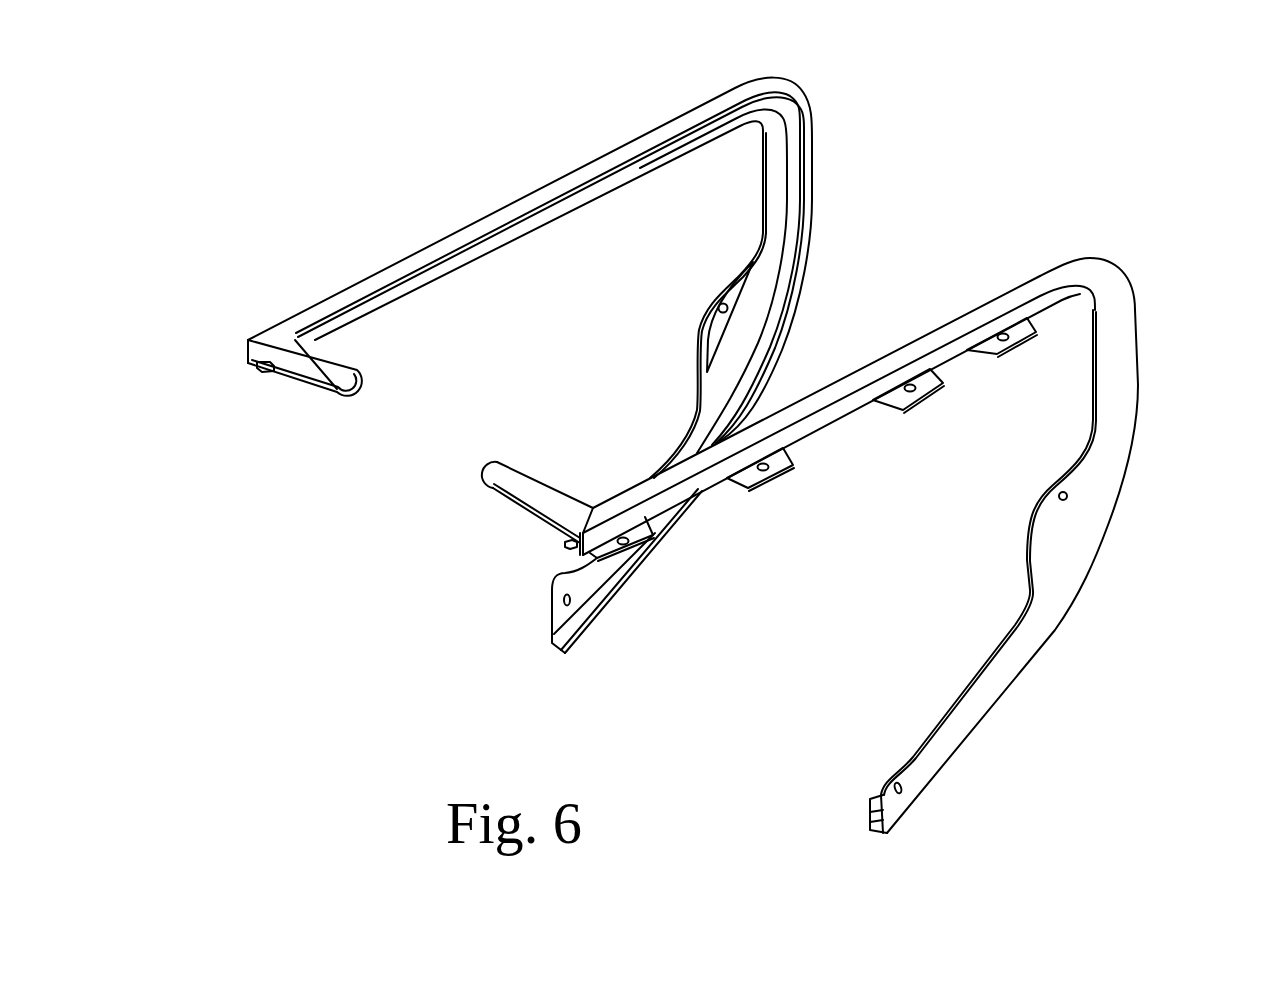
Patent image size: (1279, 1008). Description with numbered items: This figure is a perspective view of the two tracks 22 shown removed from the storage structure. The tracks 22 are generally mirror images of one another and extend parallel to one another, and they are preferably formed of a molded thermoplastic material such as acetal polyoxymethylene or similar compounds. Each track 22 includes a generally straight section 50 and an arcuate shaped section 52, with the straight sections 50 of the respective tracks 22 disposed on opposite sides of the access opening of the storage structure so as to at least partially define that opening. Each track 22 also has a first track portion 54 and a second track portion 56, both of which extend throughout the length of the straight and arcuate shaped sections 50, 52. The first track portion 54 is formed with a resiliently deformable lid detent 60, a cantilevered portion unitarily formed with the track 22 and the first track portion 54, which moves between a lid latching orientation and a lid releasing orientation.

The track 22 is at (747, 460).
The generally straight section 50 is at (523, 184).
The arcuate shaped section 52 is at (822, 210).
The first track portion 54 is at (433, 273).
The second track portion 56 is at (383, 283).
The resiliently deformable lid detent 60 is at (272, 375).